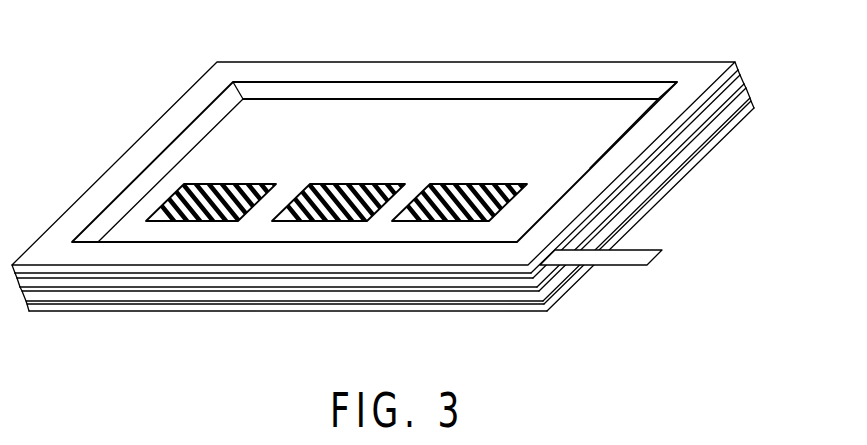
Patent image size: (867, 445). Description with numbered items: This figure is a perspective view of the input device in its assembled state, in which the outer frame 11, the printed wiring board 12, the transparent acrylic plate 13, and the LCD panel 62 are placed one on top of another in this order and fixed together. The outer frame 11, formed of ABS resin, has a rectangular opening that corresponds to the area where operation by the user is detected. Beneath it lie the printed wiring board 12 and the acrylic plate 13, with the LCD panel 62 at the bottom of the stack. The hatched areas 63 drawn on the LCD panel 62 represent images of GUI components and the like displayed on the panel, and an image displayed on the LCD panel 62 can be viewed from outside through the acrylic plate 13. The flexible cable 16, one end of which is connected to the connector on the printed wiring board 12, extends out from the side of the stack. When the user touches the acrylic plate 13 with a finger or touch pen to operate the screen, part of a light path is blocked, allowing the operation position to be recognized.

The outer frame 11 is at (667, 70).
The printed wiring board 12 is at (742, 72).
The transparent acrylic plate 13 is at (743, 92).
The LCD panel 62 is at (727, 123).
The areas 63 is at (242, 187).
The flexible cable 16 is at (643, 257).